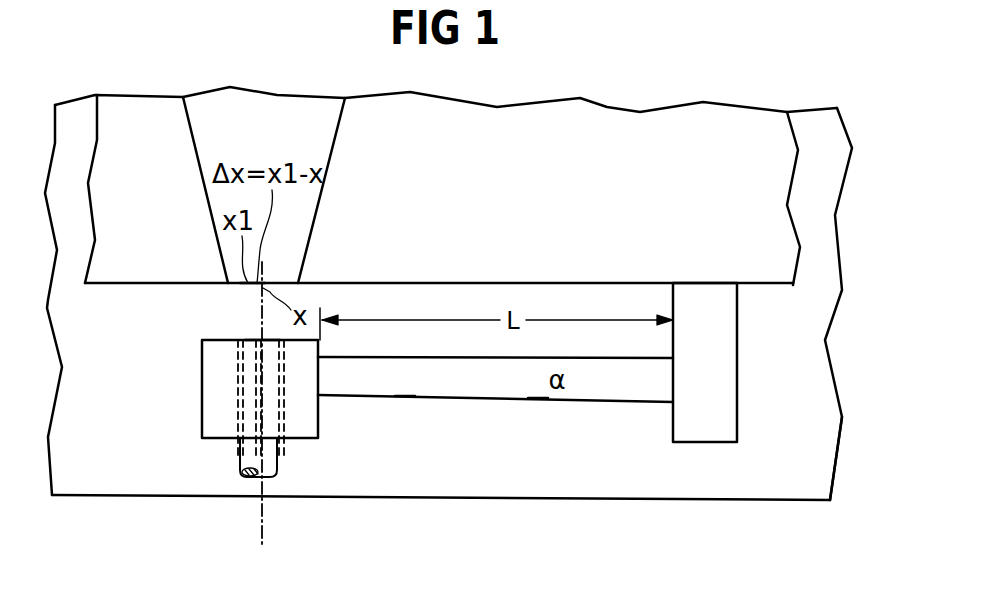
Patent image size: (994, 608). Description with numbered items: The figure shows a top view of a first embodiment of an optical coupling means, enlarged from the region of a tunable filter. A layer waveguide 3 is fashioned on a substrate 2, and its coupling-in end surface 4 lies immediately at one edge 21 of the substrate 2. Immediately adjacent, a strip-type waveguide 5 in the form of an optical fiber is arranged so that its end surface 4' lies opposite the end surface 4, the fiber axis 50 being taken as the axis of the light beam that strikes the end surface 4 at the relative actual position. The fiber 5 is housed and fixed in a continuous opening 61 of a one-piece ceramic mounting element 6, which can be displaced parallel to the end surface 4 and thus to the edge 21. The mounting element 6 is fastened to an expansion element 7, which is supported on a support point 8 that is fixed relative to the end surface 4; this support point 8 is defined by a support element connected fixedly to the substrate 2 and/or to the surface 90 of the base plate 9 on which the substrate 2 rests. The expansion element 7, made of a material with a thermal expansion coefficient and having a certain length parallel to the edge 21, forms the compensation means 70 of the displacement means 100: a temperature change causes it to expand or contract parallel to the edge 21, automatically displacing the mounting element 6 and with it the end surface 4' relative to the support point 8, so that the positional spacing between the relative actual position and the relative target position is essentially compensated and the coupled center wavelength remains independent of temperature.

The substrate 2 is at (608, 128).
The edge of the substrate 21 is at (487, 283).
The layer waveguide 3 is at (273, 117).
The end surface 4 is at (221, 302).
The end surface 4' is at (207, 333).
The strip-type waveguide 5 is at (240, 462).
The axis of the strip-type waveguide 50 is at (257, 533).
The mounting element 6 is at (202, 398).
The continuous opening 61 is at (267, 393).
The expansion element 7 is at (613, 398).
The compensation means 70 is at (538, 398).
The displacement means 100 is at (405, 398).
The support point 8 is at (715, 387).
The base plate 9 is at (755, 500).
The surface of the base plate 90 is at (813, 468).